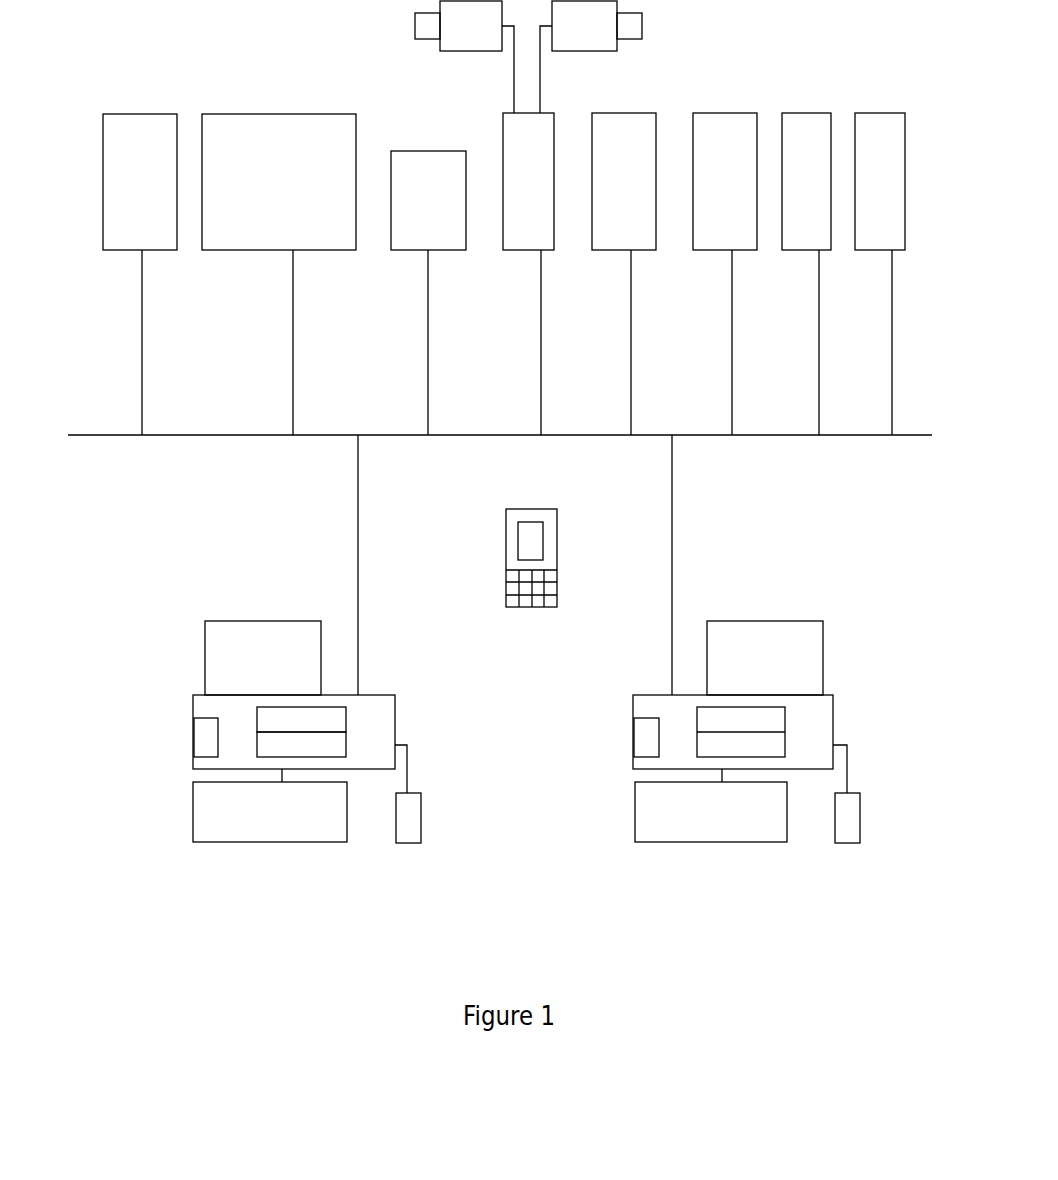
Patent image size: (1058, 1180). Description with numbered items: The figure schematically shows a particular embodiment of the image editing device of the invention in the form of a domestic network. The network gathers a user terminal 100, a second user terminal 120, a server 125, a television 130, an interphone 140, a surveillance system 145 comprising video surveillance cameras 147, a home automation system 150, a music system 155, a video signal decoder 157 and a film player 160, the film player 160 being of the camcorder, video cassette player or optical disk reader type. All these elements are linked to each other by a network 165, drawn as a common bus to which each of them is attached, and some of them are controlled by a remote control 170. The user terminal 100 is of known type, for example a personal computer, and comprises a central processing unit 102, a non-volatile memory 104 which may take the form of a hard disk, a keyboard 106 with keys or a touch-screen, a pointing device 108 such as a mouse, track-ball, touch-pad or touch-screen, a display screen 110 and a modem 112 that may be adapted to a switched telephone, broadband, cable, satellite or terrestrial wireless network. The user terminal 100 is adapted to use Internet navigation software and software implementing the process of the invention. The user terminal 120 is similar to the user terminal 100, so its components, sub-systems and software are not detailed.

The user terminal 100 is at (264, 672).
The central processing unit 102 is at (333, 745).
The non-volatile memory 104 is at (333, 720).
The keyboard 106 is at (230, 830).
The pointing device 108 is at (405, 830).
The display screen 110 is at (218, 632).
The modem 112 is at (205, 745).
The user terminal 120 is at (620, 733).
The server 125 is at (127, 238).
The television 130 is at (278, 237).
The interphone 140 is at (415, 237).
The surveillance system 145 is at (528, 237).
The video surveillance cameras 147 is at (578, 38).
The home automation system 150 is at (630, 126).
The music system 155 is at (730, 237).
The video signal decoder 157 is at (818, 237).
The film player 160 is at (890, 237).
The network 165 is at (255, 437).
The remote control 170 is at (492, 545).